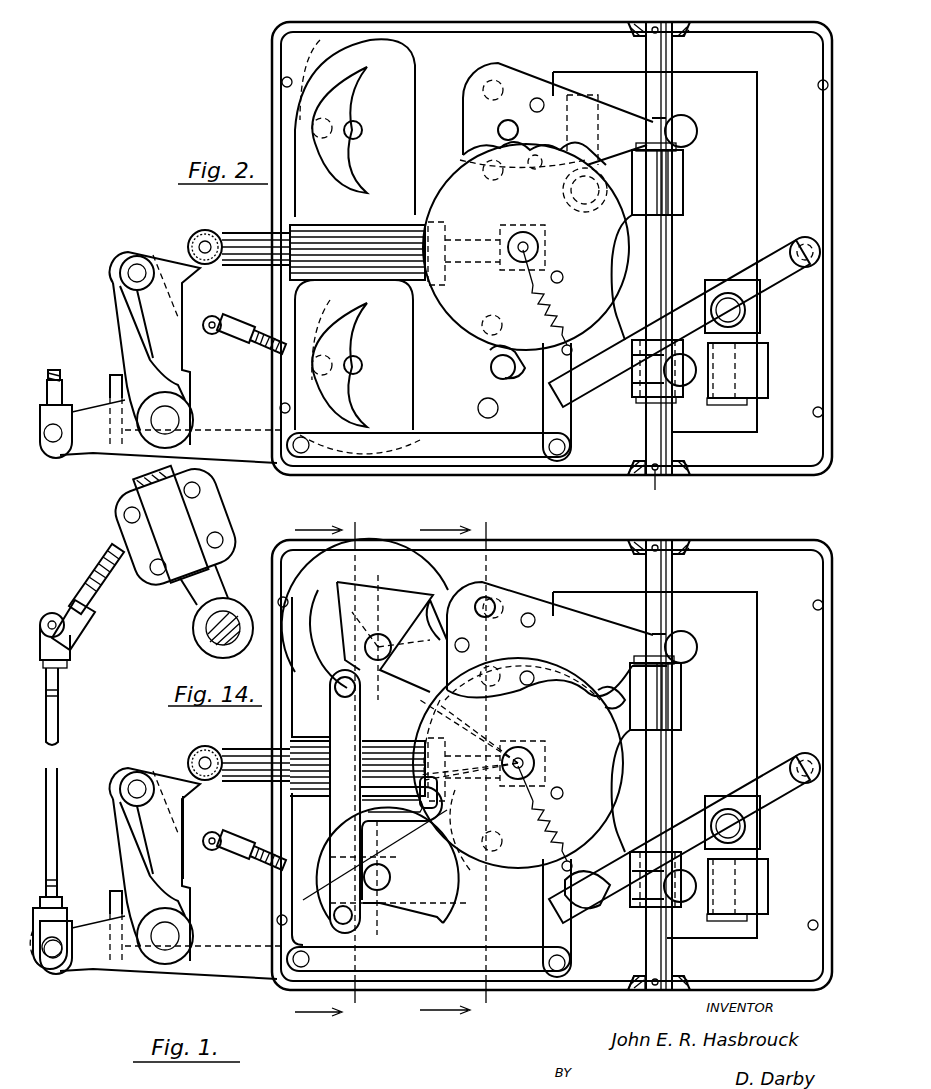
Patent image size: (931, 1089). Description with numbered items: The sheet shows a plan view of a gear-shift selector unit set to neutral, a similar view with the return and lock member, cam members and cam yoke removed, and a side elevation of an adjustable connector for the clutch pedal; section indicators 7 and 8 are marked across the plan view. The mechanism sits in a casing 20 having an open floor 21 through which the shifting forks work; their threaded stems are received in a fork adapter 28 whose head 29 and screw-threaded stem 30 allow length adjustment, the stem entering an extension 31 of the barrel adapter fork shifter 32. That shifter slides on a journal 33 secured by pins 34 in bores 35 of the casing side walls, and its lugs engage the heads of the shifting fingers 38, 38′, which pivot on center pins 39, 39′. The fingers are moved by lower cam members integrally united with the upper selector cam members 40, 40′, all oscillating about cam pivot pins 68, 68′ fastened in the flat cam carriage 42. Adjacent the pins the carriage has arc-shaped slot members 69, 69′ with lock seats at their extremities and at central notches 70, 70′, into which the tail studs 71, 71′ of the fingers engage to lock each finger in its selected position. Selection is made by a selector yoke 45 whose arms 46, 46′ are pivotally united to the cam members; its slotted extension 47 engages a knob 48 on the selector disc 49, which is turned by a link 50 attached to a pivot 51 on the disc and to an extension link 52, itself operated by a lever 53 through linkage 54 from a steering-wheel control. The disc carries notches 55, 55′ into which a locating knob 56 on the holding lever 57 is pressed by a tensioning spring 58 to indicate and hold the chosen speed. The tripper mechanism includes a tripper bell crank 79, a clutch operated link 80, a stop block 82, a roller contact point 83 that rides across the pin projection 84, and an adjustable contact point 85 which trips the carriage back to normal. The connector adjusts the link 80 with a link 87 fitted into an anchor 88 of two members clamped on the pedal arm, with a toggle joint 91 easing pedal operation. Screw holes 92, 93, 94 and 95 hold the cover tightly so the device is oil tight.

In FIG. 1, the section line 7 is at (325, 772).
In FIG. 1, the section line 8 is at (459, 761).
In FIG. 2, the casing 20 is at (743, 466).
In FIG. 1, the open floor 21 is at (765, 681).
In FIG. 2, the fork adapter 28 is at (745, 322).
In FIG. 1, the fork adapter 28 is at (755, 846).
In FIG. 1, the head 29 is at (745, 820).
In FIG. 1, the screw-threaded stem 30 is at (722, 921).
In FIG. 2, the extension 31 is at (757, 373).
In FIG. 1, the extension 31 is at (758, 901).
In FIG. 2, the barrel adapter fork shifter 32 is at (683, 188).
In FIG. 1, the barrel adapter fork shifter 32 is at (681, 690).
In FIG. 2, the barrel adapter journal 33 is at (672, 237).
In FIG. 1, the barrel adapter journal 33 is at (672, 953).
In FIG. 2, the pins 34 is at (672, 478).
In FIG. 1, the pins 34 is at (656, 986).
In FIG. 2, the bores 35 is at (636, 478).
In FIG. 1, the bores 35 is at (634, 982).
In FIG. 1, the shifting finger 38 is at (600, 902).
In FIG. 1, the shifting finger 38′ is at (557, 614).
In FIG. 2, the center pin 39 is at (497, 375).
In FIG. 2, the center pin 39′ is at (500, 127).
In FIG. 1, the upper selector cam member 40 is at (443, 920).
In FIG. 1, the upper selector cam member 40′ is at (430, 588).
In FIG. 2, the cam carriage 42 is at (292, 210).
In FIG. 1, the selector yoke 45 is at (330, 793).
In FIG. 1, the arm 46 is at (330, 900).
In FIG. 1, the arm 46′ is at (333, 718).
In FIG. 1, the slotted extension 47 is at (440, 796).
In FIG. 1, the knob 48 is at (443, 765).
In FIG. 1, the selector disc 49 is at (576, 770).
In FIG. 2, the link 50 is at (572, 430).
In FIG. 1, the link 50 is at (572, 936).
In FIG. 2, the pivot 51 is at (562, 270).
In FIG. 1, the pivot 51 is at (565, 793).
In FIG. 1, the extension link 52 is at (410, 950).
In FIG. 1, the lever 53 is at (188, 975).
In FIG. 1, the linkage 54 is at (110, 896).
In FIG. 2, the notches 55 is at (612, 300).
In FIG. 1, the notches 55 is at (616, 830).
In FIG. 2, the notches 55′ is at (539, 111).
In FIG. 1, the notches 55′ is at (612, 694).
In FIG. 2, the locating knob 56 is at (498, 409).
In FIG. 2, the holding lever 57 is at (618, 357).
In FIG. 1, the holding lever 57 is at (699, 797).
In FIG. 2, the tensioning spring 58 is at (538, 298).
In FIG. 1, the tensioning spring 58 is at (560, 826).
In FIG. 1, the cam pivot pin 68 is at (378, 892).
In FIG. 1, the cam pivot pin 68′ is at (380, 633).
In FIG. 2, the arc-shaped slot member 69 is at (352, 412).
In FIG. 2, the arc-shaped slot member 69′ is at (350, 72).
In FIG. 2, the notch 70 is at (357, 352).
In FIG. 2, the notch 70′ is at (358, 120).
In FIG. 2, the tail stud 71 is at (362, 366).
In FIG. 2, the tail stud 71′ is at (362, 130).
In FIG. 1, the tripper bell crank 79 is at (184, 822).
In FIG. 14, the clutch operated link 80 is at (58, 720).
In FIG. 1, the clutch operated link 80 is at (54, 850).
In FIG. 1, the stop block 82 is at (190, 902).
In FIG. 1, the contact point 83 is at (210, 781).
In FIG. 1, the pin projection 84 is at (265, 782).
In FIG. 1, the adjustable contact point 85 is at (211, 850).
In FIG. 14, the link 87 is at (104, 588).
In FIG. 14, the anchor 88 is at (208, 514).
In FIG. 14, the toggle joint 91 is at (70, 645).
In FIG. 2, the screw hole 92 is at (818, 87).
In FIG. 2, the screw hole 93 is at (814, 415).
In FIG. 2, the screw hole 94 is at (280, 408).
In FIG. 2, the screw hole 95 is at (283, 84).